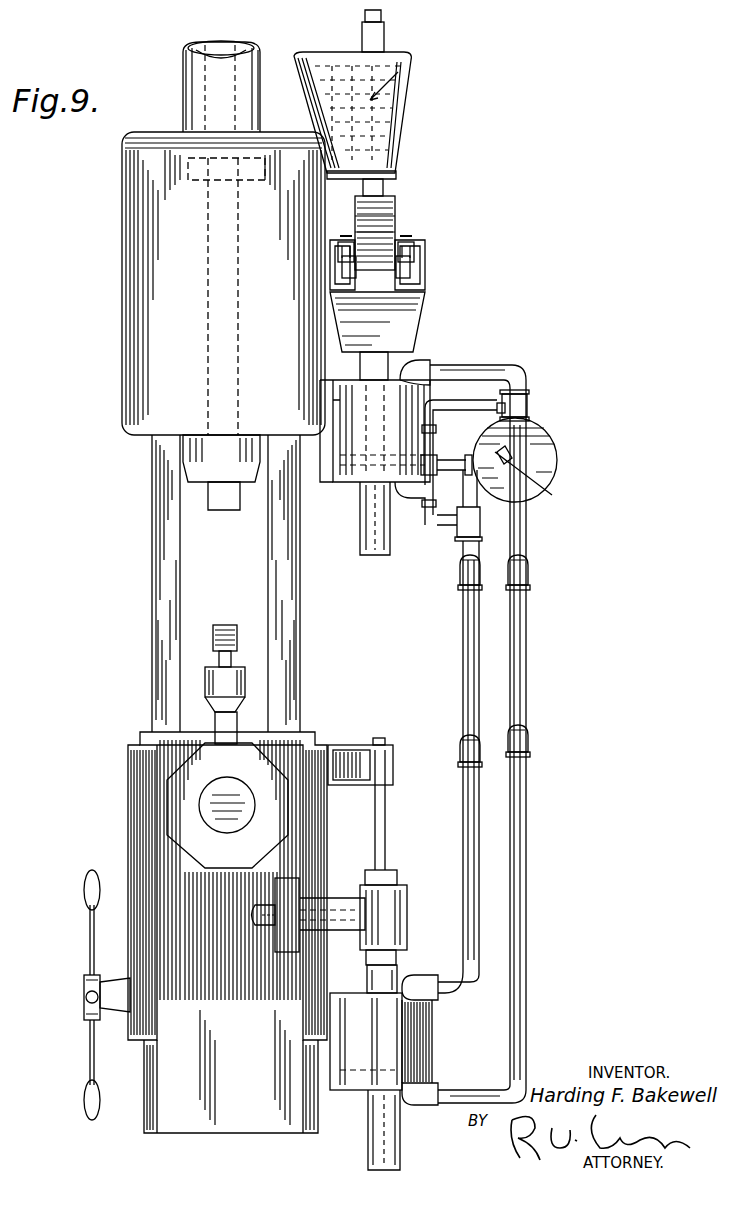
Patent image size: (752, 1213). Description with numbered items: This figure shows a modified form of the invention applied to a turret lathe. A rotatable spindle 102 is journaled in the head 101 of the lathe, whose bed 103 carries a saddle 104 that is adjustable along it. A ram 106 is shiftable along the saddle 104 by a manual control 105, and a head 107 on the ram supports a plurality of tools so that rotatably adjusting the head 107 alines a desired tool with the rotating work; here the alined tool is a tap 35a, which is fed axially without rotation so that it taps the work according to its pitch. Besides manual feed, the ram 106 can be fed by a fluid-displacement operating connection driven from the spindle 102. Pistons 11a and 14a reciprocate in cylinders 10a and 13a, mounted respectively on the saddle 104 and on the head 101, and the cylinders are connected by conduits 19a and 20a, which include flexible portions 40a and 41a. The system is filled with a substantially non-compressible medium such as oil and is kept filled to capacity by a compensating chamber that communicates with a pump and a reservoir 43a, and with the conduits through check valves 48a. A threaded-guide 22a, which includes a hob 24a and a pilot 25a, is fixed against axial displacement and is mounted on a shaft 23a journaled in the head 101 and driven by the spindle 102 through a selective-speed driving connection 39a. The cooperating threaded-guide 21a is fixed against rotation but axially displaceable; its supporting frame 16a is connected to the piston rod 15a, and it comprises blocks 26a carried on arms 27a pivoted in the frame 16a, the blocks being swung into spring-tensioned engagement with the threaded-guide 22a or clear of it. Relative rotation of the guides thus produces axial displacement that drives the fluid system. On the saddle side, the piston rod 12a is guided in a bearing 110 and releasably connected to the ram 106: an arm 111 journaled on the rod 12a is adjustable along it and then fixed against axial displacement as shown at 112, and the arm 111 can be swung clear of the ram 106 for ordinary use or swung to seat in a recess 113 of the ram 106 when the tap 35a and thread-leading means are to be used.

The head 101 is at (135, 336).
The rotatable spindle 102 is at (215, 396).
The bed 103 is at (166, 570).
The saddle 104 is at (135, 828).
The manual control 105 is at (86, 986).
The ram 106 is at (192, 1122).
The head 107 is at (227, 805).
The bearing 110 is at (355, 752).
The arm 111 is at (333, 900).
The fixing means 112 is at (405, 940).
The recess 113 is at (280, 938).
The cylinder 10a is at (410, 1050).
The piston 11a is at (357, 1085).
The piston rod 12a is at (397, 978).
The cylinder 13a is at (348, 452).
The piston 14a is at (352, 485).
The piston rod 15a is at (394, 354).
The supporting frame 16a is at (406, 316).
The conduit 19a is at (472, 368).
The conduit 20a is at (452, 505).
The threaded-guide 21a is at (436, 261).
The threaded-guide 22a is at (408, 215).
The shaft 23a is at (392, 172).
The hob 24a is at (388, 192).
The pilot 25a is at (395, 240).
The blocks 26a is at (402, 272).
The arms 27a is at (350, 250).
The tap 35a is at (228, 625).
The selective-speed driving connection 39a is at (412, 62).
The flexible portion 40a is at (518, 645).
The flexible portion 41a is at (468, 640).
The reservoir 43a is at (545, 458).
The check valves 48a is at (436, 440).